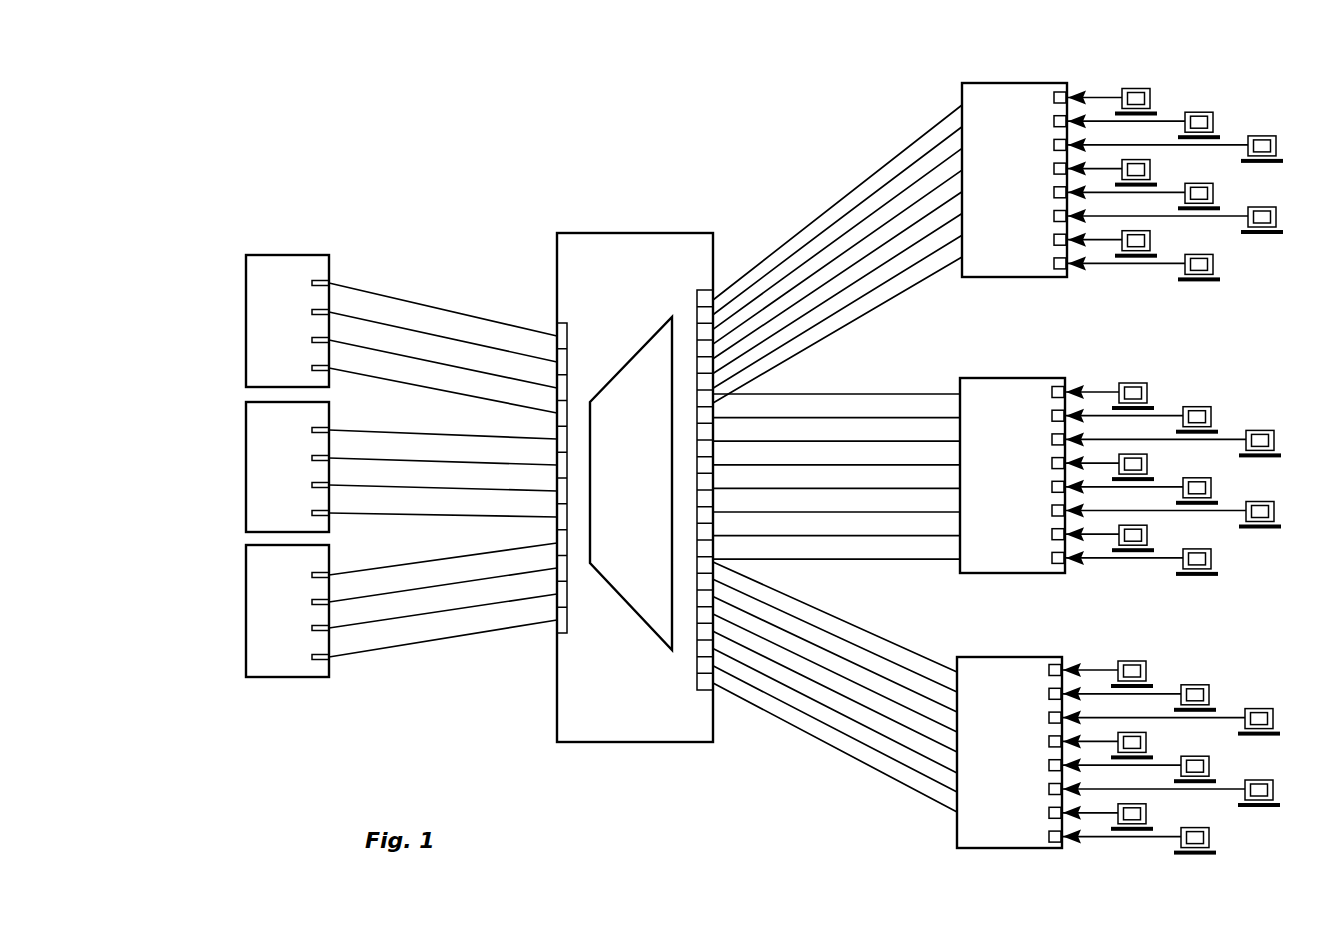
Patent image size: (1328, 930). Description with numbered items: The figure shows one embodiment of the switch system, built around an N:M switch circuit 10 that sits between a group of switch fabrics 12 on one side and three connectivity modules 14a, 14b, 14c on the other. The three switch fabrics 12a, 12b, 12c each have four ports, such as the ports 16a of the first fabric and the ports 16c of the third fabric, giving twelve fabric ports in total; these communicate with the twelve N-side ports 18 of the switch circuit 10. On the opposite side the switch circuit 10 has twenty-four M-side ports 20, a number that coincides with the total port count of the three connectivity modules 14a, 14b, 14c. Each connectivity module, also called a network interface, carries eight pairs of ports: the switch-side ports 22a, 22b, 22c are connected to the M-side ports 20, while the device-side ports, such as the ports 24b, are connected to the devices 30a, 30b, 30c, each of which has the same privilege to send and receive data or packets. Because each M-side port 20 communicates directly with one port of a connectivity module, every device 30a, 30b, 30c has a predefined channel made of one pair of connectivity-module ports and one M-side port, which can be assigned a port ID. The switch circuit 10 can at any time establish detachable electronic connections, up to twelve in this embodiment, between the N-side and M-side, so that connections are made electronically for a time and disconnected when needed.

The N:M switch circuit 10 is at (635, 433).
The switch fabrics 12 is at (270, 150).
The switch fabric 12a is at (364, 318).
The switch fabric 12b is at (246, 472).
The switch fabric 12c is at (364, 636).
The connectivity module 14a is at (1018, 74).
The connectivity module 14b is at (1017, 362).
The connectivity module 14c is at (1014, 646).
The ports 16a is at (320, 282).
The ports 16c is at (320, 662).
The N-side ports 18 is at (563, 305).
The M-side ports 20 is at (707, 272).
The connectivity module ports 22a is at (955, 88).
The connectivity module ports 22b is at (955, 380).
The connectivity module ports 22c is at (955, 664).
The connectivity module ports 24b is at (1066, 90).
The devices 30a is at (1219, 92).
The devices 30b is at (1217, 380).
The devices 30c is at (1215, 663).